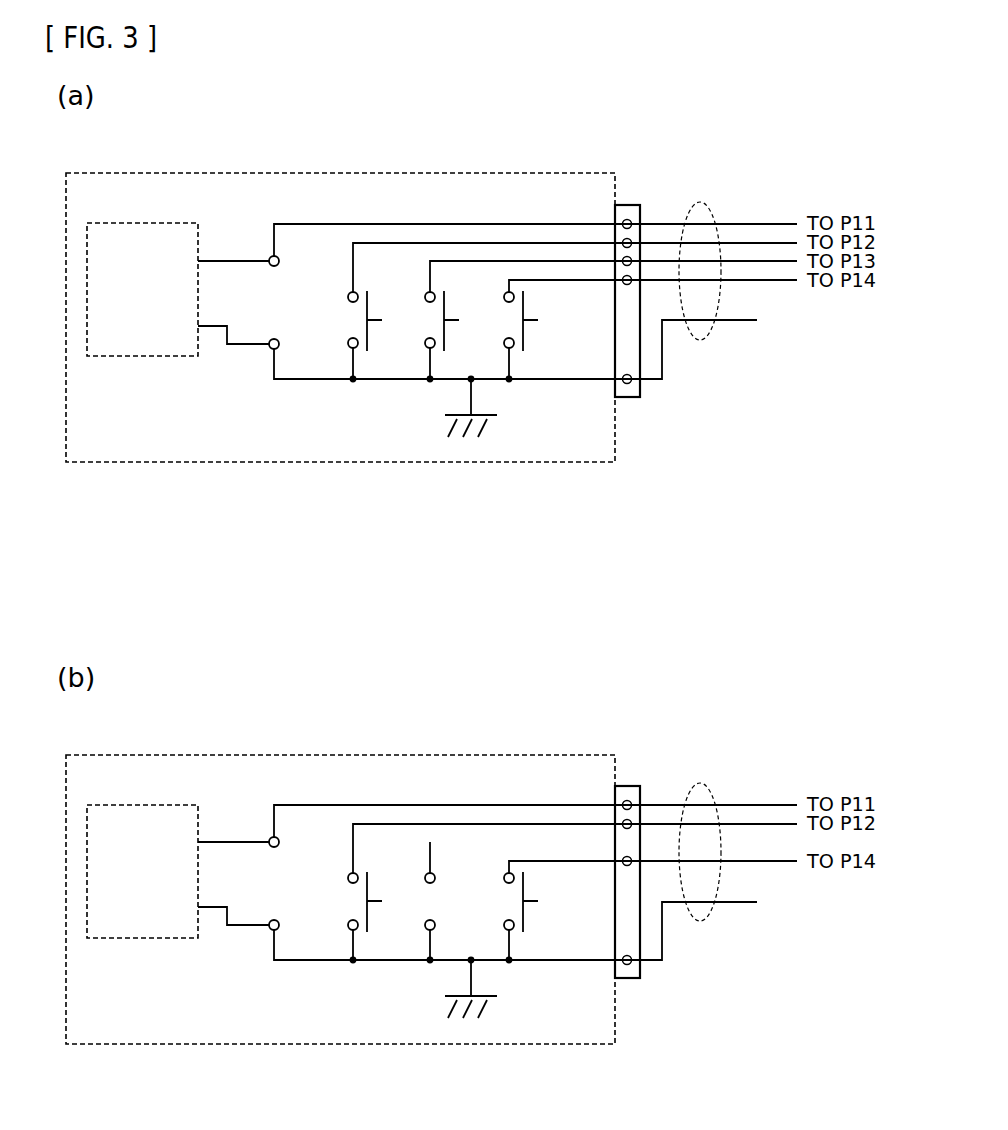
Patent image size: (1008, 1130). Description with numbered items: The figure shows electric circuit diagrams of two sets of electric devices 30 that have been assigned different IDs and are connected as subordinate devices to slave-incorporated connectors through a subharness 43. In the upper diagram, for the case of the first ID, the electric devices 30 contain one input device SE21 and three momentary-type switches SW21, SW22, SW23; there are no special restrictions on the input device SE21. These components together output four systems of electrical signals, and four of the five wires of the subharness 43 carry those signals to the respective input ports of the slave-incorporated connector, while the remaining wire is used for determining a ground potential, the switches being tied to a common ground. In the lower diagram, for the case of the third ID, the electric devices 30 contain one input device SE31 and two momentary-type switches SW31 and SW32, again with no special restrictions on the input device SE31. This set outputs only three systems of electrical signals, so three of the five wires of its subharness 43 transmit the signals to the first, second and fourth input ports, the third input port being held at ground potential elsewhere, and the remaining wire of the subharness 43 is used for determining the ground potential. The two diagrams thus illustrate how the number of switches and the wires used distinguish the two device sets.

The electric devices 30 is at (115, 463).
The subharness 43 is at (700, 202).
The input device SE21 is at (170, 357).
The input device SE31 is at (170, 939).
The switch SW21 is at (350, 292).
The switch SW22 is at (427, 290).
The switch SW23 is at (517, 350).
The switch SW31 is at (350, 874).
The switch SW32 is at (506, 873).